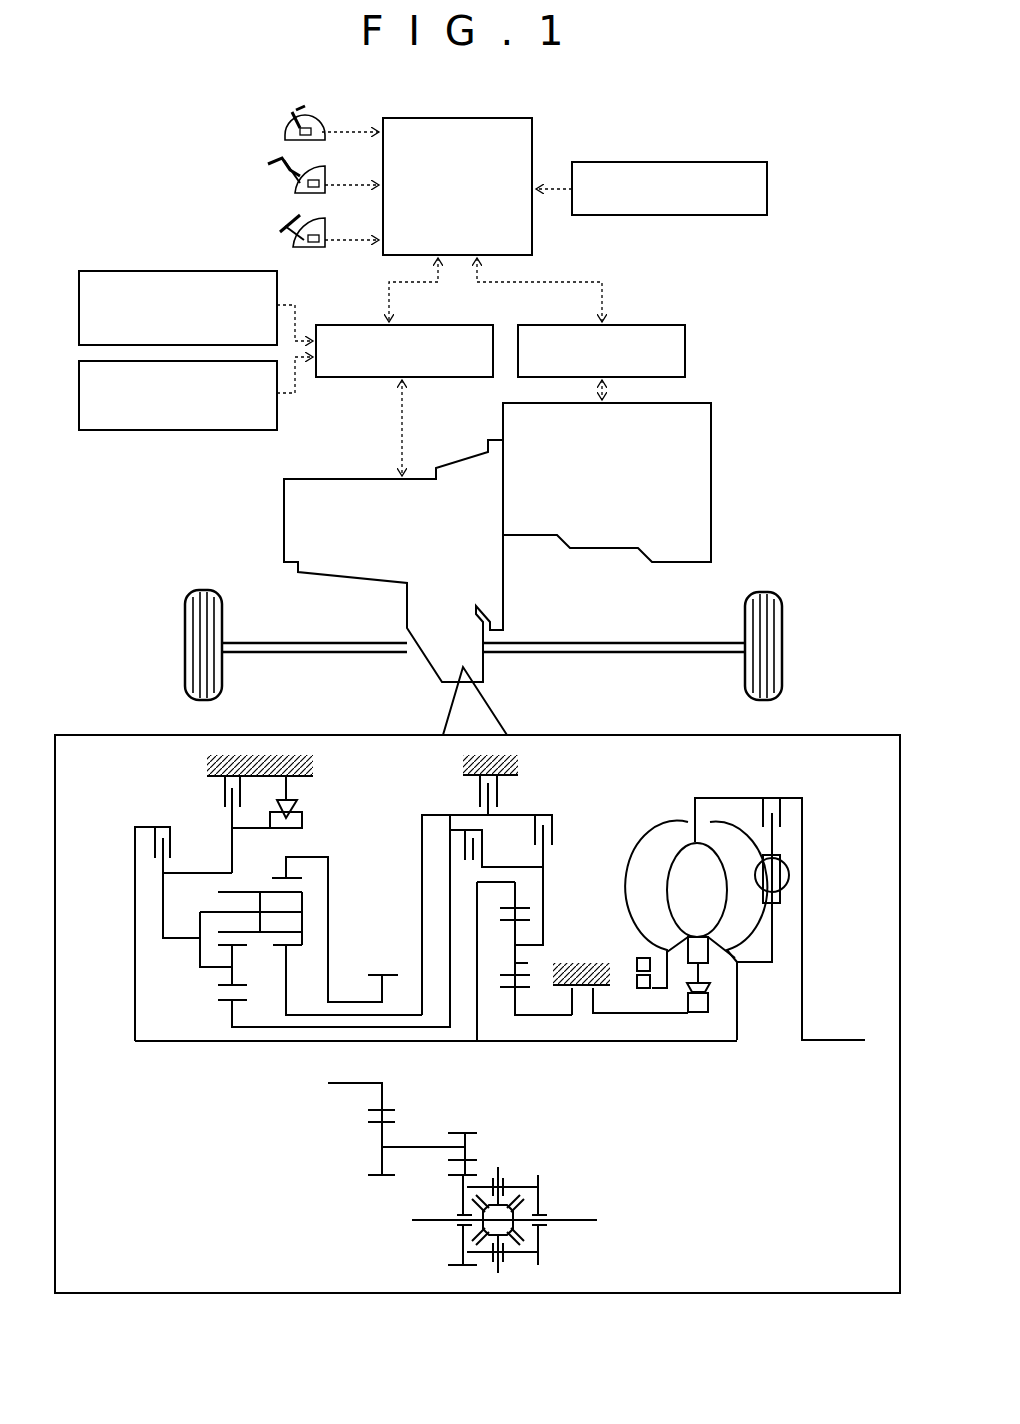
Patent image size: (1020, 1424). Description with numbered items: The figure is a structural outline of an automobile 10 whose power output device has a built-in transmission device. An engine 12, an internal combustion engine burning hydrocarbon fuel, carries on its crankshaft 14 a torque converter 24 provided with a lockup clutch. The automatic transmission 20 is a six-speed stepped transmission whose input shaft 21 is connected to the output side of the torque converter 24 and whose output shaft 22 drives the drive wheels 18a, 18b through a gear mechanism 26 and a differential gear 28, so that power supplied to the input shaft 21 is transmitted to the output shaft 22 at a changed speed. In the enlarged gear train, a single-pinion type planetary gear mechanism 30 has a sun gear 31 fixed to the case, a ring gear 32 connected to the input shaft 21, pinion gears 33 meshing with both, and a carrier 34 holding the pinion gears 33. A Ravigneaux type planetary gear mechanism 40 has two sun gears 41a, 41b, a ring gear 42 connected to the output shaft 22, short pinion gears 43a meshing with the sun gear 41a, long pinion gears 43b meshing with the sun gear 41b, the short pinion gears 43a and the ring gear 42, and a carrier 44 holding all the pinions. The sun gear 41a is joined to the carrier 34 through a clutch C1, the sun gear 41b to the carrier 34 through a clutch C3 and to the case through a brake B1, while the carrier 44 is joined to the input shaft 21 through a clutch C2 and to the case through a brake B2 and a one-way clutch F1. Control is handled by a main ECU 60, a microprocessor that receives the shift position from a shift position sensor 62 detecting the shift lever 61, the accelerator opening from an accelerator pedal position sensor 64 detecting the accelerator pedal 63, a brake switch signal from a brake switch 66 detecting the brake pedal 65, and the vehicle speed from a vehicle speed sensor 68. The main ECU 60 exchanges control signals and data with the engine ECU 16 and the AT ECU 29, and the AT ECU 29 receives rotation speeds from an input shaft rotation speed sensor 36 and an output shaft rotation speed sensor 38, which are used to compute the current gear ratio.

The automobile 10 is at (152, 116).
The engine 12 is at (711, 478).
The crankshaft 14 is at (838, 1040).
The engine ECU 16 is at (686, 352).
The drive wheel 18a is at (785, 646).
The drive wheel 18b is at (185, 648).
The automatic transmission 20 is at (284, 520).
The input shaft 21 is at (713, 1040).
The output shaft 22 is at (352, 1002).
The torque converter 24 is at (676, 821).
The gear mechanism 26 is at (413, 1134).
The differential gear 28 is at (514, 1161).
The AT ECU 29 is at (350, 325).
The single-pinion type planetary gear mechanism 30 is at (598, 869).
The sun gear 31 is at (508, 987).
The ring gear 32 is at (517, 908).
The pinion gears 33 is at (520, 965).
The carrier 34 is at (543, 945).
The input shaft rotation speed sensor 36 is at (79, 304).
The output shaft rotation speed sensor 38 is at (79, 392).
The Ravigneaux type planetary gear mechanism 40 is at (186, 1009).
The sun gear 41a is at (225, 1003).
The sun gear 41b is at (282, 948).
The ring gear 42 is at (298, 862).
The short pinion gears 43a is at (232, 975).
The long pinion gears 43b is at (222, 892).
The carrier 44 is at (180, 938).
The main ECU 60 is at (482, 118).
The shift lever 61 is at (290, 124).
The shift position sensor 62 is at (285, 136).
The accelerator pedal 63 is at (286, 160).
The accelerator pedal position sensor 64 is at (296, 186).
The brake pedal 65 is at (290, 220).
The brake switch 66 is at (294, 240).
The vehicle speed sensor 68 is at (768, 189).
The brake B1 is at (497, 805).
The brake B2 is at (222, 800).
The clutch C1 is at (457, 835).
The clutch C2 is at (157, 827).
The clutch C3 is at (550, 835).
The one-way clutch F1 is at (300, 800).